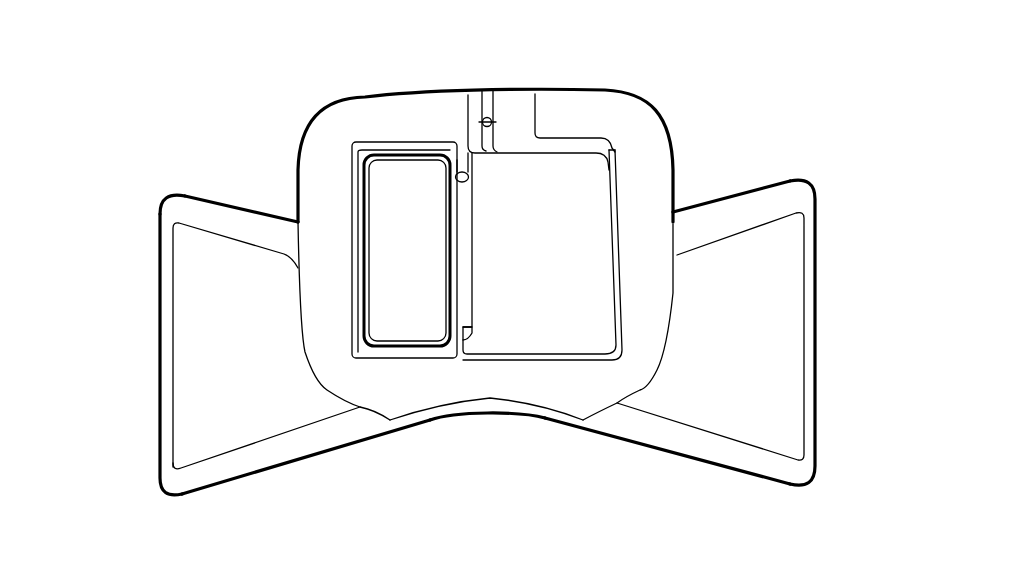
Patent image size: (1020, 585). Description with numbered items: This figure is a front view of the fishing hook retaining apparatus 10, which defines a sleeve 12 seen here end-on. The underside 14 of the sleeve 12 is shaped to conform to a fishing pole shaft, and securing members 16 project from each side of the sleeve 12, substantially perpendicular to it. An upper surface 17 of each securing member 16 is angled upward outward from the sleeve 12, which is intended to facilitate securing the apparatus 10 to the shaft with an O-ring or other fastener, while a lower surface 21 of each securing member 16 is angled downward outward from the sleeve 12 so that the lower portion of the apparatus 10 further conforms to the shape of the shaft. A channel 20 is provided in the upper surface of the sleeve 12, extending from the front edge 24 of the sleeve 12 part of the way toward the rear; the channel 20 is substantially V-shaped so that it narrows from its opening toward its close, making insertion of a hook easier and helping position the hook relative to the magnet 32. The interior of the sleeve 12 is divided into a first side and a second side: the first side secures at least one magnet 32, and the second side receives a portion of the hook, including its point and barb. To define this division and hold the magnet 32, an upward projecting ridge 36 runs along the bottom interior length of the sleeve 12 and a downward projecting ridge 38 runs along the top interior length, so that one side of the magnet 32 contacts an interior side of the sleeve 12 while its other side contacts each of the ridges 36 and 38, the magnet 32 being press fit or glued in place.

The fishing hook retaining apparatus 10 is at (256, 58).
The sleeve 12 is at (627, 110).
The underside 14 is at (530, 408).
The securing member 16 is at (180, 347).
The upper surface 17 is at (227, 202).
The channel 20 is at (487, 83).
The lower surface 21 is at (270, 473).
The front edge 24 is at (400, 112).
The magnet 32 is at (392, 318).
The upward projecting ridge 36 is at (478, 327).
The downward projecting ridge 38 is at (467, 180).